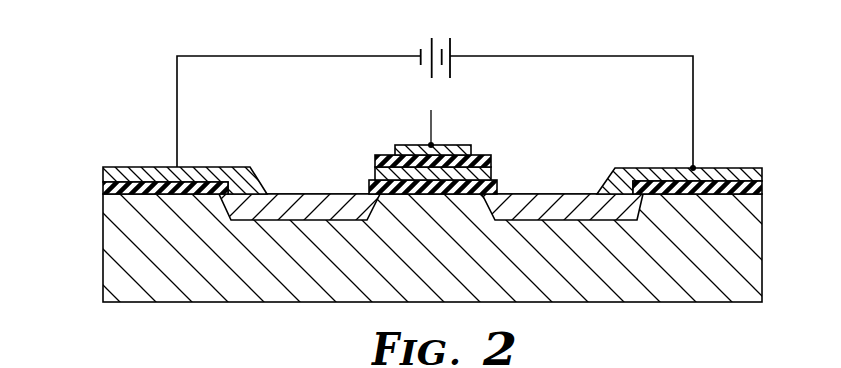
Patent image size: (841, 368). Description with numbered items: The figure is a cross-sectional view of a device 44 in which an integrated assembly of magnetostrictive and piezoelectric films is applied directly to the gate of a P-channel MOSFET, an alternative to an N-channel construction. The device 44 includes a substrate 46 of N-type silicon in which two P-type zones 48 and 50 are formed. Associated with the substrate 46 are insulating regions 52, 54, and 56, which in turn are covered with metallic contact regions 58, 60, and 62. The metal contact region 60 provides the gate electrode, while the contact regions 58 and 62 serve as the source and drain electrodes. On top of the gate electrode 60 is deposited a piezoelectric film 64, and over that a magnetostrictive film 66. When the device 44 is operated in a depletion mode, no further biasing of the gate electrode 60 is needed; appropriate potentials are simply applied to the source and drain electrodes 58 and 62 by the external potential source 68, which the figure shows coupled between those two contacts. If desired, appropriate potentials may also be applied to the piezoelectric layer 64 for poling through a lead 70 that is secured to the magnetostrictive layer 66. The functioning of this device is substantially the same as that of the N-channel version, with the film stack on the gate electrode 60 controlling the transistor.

The device 44 is at (157, 117).
The substrate 46 is at (169, 291).
The P-type zone 48 is at (300, 203).
The P-type zone 50 is at (570, 205).
The insulating region 52 is at (107, 187).
The insulating region 54 is at (497, 186).
The insulating region 56 is at (760, 188).
The source electrode 58 is at (112, 168).
The gate electrode 60 is at (377, 173).
The drain electrode 62 is at (743, 168).
The piezoelectric film 64 is at (490, 163).
The magnetostrictive film 66 is at (463, 148).
The potential source 68 is at (450, 49).
The lead 70 is at (431, 118).